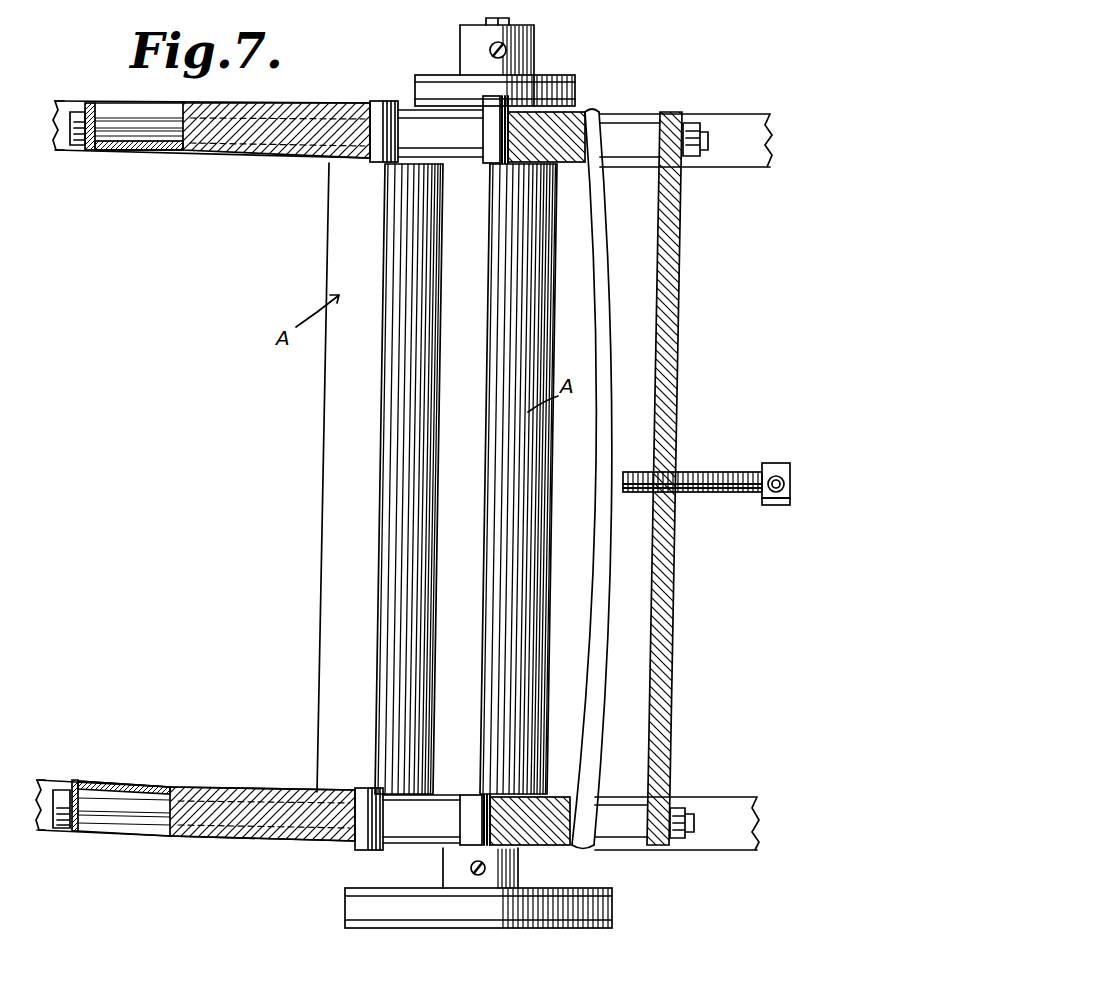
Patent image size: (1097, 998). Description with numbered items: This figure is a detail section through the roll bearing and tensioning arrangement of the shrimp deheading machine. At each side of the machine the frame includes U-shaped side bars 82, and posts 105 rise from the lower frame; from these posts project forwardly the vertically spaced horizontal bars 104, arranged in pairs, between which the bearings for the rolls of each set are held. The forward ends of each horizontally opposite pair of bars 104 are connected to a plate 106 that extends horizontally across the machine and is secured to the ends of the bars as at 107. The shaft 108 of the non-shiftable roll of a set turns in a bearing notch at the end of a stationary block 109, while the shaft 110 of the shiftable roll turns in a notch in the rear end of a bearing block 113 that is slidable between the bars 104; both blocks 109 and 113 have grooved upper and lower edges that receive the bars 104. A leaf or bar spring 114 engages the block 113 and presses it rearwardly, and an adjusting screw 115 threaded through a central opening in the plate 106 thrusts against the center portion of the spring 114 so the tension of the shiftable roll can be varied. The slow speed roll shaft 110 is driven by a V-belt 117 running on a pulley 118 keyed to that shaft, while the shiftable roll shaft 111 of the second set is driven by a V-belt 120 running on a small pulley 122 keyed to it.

The U-shaped side bars 82 is at (724, 113).
The horizontal bars 104 is at (614, 126).
The posts 105 is at (150, 158).
The plate 106 is at (670, 373).
The securing point 107 is at (708, 146).
The shafts of the non-shiftable rolls 108 is at (383, 101).
The stationary blocks 109 is at (280, 152).
The slow speed roll shaft 110 is at (496, 146).
The shiftable roll shaft 111 is at (525, 61).
The bearing blocks 113 is at (563, 128).
The leaf or bar springs 114 is at (602, 262).
The adjusting screws 115 is at (712, 472).
The V-belt 117 is at (516, 910).
The pulley 118 is at (421, 928).
The V-belt 120 is at (546, 96).
The small pulley 122 is at (428, 75).